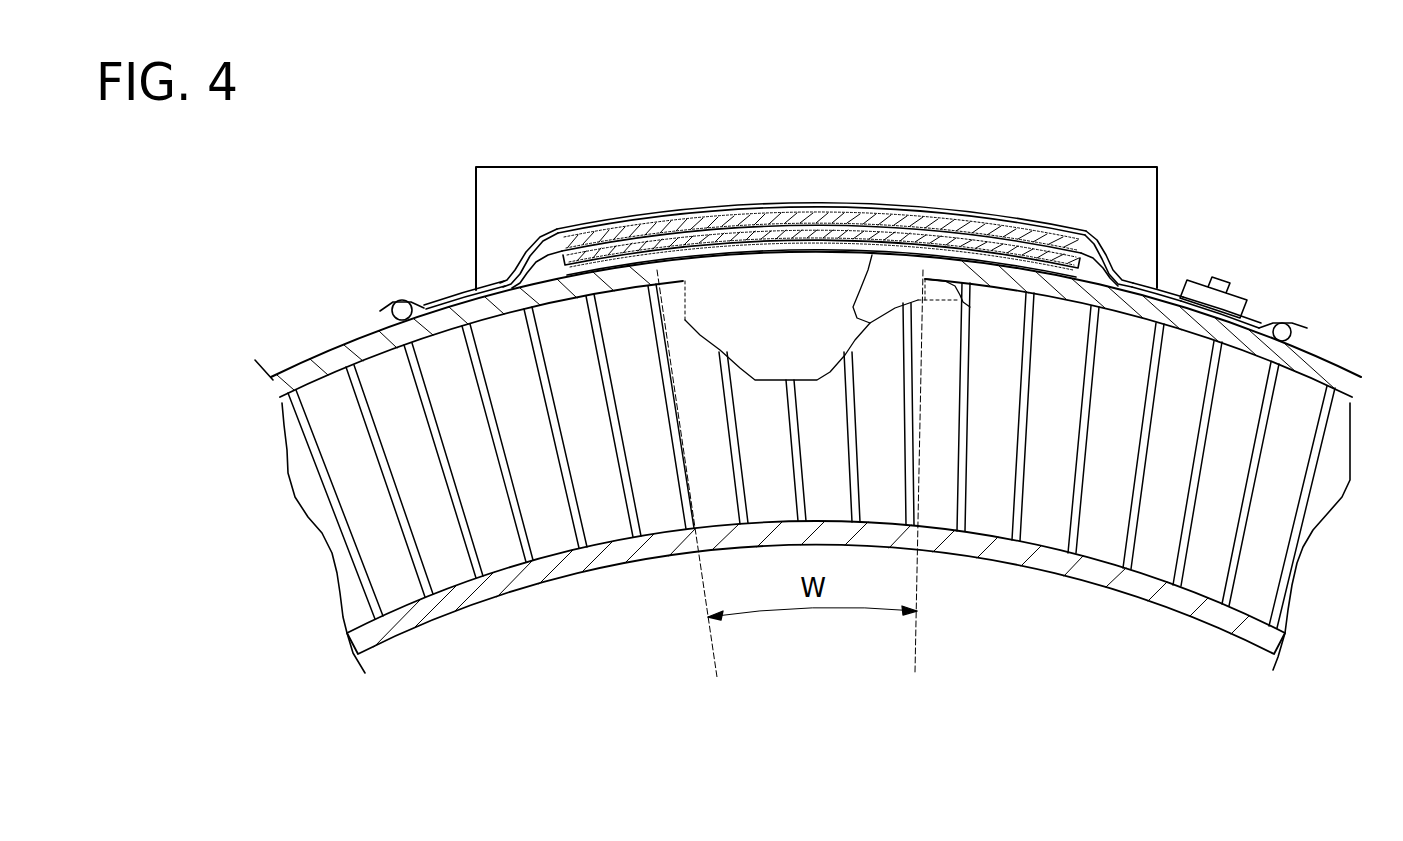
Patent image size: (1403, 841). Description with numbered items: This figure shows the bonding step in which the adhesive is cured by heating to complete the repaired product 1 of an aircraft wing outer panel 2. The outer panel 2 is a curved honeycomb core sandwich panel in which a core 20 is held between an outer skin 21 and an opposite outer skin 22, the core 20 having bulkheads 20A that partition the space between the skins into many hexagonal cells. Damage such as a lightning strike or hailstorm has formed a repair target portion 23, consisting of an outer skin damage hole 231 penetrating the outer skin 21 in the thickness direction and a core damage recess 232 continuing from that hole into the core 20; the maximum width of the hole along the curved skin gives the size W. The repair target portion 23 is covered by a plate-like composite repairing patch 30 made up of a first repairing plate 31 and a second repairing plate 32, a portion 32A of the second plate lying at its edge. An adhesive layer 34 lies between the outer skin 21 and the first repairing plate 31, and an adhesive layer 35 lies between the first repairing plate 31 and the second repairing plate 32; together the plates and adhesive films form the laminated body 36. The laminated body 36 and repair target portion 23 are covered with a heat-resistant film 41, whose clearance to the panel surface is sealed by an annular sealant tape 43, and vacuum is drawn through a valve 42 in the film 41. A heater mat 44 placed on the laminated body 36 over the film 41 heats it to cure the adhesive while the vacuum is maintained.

The repaired product 1 is at (1153, 178).
The outer panel 2 is at (349, 341).
The core 20 is at (1337, 500).
The bulkheads 20A is at (1022, 505).
The outer skin 21 is at (1360, 378).
The outer skin 22 is at (1160, 608).
The repair target portion 23 is at (827, 231).
The outer skin damage hole 231 is at (925, 307).
The core damage recess 232 is at (850, 310).
The repairing patch 30 is at (752, 194).
The first repairing plate 31 is at (592, 247).
The second repairing plate 32 is at (750, 214).
The bent end portion 32A is at (532, 262).
The adhesive layer 34 is at (768, 225).
The adhesive layer 35 is at (692, 252).
The laminated body 36 is at (983, 222).
The heat-resistant film 41 is at (1162, 300).
The valve 42 is at (1235, 290).
The sealant tape 43 is at (1295, 337).
The heater mat 44 is at (1104, 238).